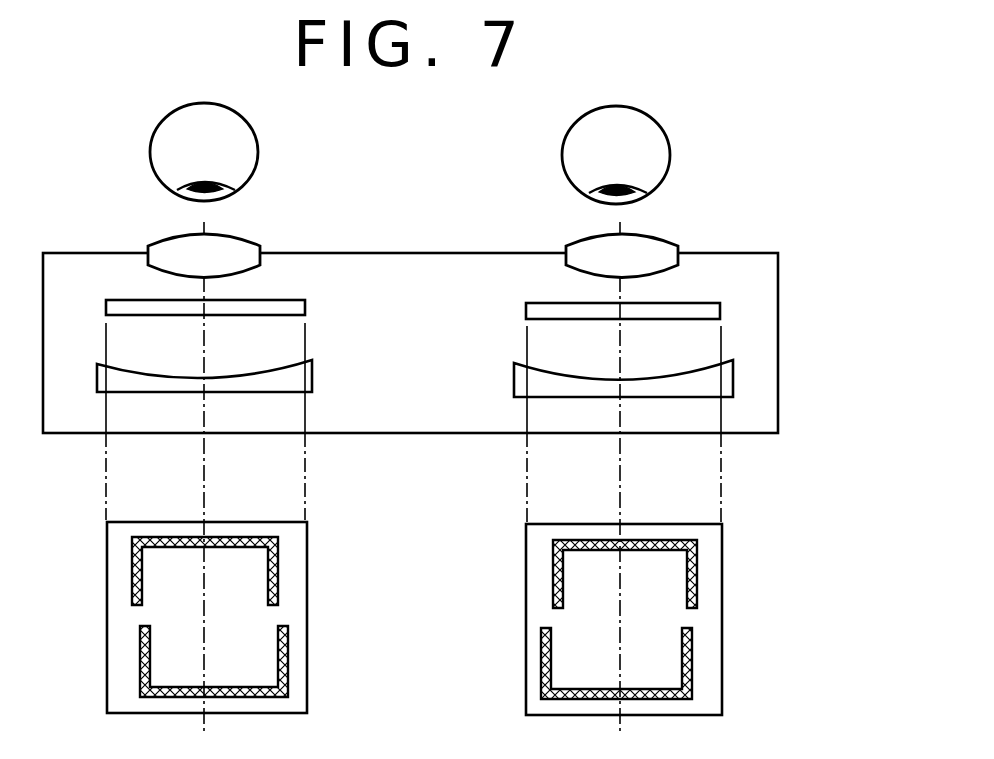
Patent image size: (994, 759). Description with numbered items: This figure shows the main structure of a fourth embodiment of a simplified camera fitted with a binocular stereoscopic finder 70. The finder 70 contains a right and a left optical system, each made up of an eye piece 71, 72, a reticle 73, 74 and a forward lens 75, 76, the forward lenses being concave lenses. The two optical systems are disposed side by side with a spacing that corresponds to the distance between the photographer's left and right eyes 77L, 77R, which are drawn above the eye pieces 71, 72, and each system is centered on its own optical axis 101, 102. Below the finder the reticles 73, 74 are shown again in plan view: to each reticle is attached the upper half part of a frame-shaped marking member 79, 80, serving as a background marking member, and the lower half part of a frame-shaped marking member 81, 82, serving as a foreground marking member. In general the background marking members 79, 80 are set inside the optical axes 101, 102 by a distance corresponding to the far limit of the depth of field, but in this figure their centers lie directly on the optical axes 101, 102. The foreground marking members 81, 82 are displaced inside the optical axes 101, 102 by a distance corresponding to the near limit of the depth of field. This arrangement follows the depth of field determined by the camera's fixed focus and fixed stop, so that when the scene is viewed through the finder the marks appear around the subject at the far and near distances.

The binocular stereoscopic finder 70 is at (778, 290).
The eye piece 71 is at (255, 243).
The eye piece 72 is at (686, 230).
The reticle 73 is at (283, 300).
The reticle 74 is at (708, 280).
The forward lens 75 is at (312, 375).
The forward lens 76 is at (514, 370).
The right eye 77R is at (258, 147).
The left eye 77L is at (670, 150).
The background marking member 79 is at (278, 585).
The background marking member 80 is at (697, 590).
The foreground marking member 81 is at (288, 648).
The foreground marking member 82 is at (692, 653).
The optical axis 101 is at (204, 489).
The optical axis 102 is at (620, 488).